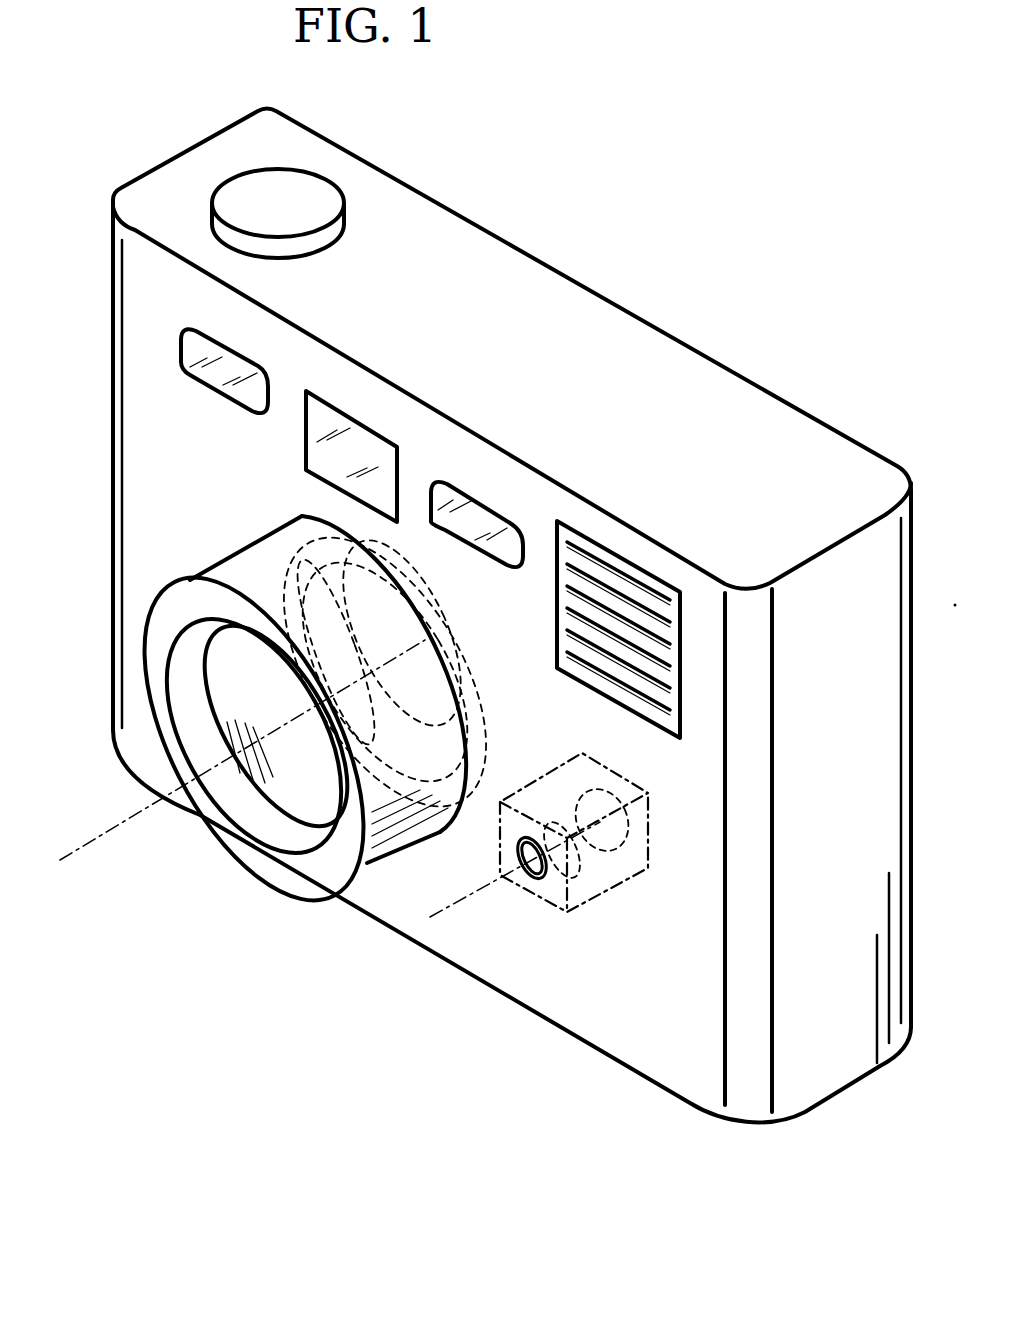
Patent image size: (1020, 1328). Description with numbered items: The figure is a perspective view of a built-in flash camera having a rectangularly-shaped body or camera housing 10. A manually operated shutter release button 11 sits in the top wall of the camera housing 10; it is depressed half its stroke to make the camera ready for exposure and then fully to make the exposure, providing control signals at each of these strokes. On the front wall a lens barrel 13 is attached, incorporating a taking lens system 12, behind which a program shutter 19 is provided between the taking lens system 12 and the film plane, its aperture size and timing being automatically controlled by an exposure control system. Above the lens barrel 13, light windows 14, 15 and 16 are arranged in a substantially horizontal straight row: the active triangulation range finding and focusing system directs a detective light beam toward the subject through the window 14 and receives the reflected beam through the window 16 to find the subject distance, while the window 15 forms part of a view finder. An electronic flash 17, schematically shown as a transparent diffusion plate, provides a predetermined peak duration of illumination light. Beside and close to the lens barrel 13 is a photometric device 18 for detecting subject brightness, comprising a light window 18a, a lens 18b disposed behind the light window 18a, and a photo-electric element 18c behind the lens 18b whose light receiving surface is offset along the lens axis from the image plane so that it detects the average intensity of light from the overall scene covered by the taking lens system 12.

The camera housing 10 is at (600, 307).
The shutter release button 11 is at (338, 188).
The taking lens system 12 is at (273, 773).
The lens barrel 13 is at (390, 868).
The light window 14 is at (247, 367).
The light window 15 is at (377, 447).
The light window 16 is at (503, 513).
The electronic flash 17 is at (628, 572).
The photometric device 18 is at (590, 915).
The light window 18a is at (525, 882).
The lens 18b is at (598, 873).
The photo-electric element 18c is at (648, 803).
The program shutter 19 is at (477, 660).